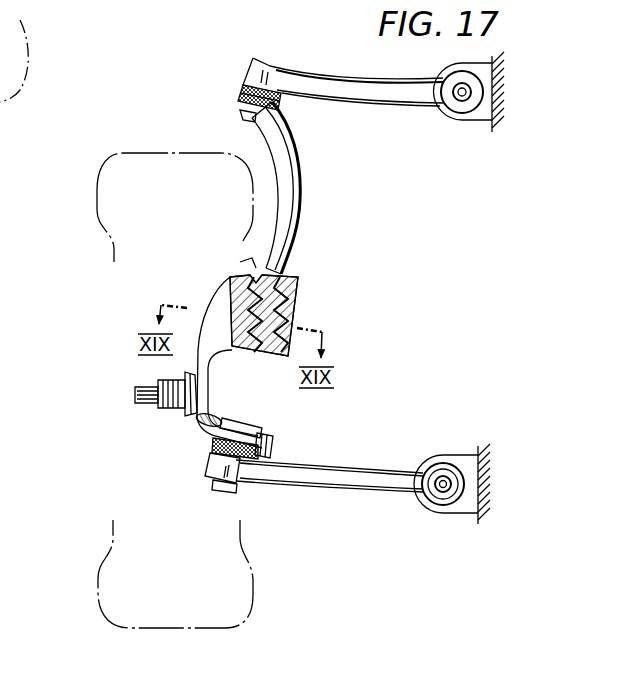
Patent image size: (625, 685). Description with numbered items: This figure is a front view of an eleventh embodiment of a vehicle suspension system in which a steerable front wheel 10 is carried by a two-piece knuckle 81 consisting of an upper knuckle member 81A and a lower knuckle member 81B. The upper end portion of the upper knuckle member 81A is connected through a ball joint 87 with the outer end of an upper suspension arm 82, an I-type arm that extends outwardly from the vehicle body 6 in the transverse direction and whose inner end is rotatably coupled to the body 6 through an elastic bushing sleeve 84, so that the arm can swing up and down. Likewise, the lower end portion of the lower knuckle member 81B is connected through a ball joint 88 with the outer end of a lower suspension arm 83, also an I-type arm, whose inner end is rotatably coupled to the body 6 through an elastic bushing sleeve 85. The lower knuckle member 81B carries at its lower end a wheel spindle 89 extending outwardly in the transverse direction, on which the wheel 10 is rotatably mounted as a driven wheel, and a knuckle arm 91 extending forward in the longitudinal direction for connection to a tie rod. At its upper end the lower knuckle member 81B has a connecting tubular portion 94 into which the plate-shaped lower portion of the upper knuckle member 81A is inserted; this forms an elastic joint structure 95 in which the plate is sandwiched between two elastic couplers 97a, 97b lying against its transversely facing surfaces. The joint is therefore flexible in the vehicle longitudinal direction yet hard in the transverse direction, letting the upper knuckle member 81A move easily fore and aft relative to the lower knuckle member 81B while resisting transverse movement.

The body 6 is at (497, 103).
The wheel 10 is at (97, 206).
The knuckle 81 is at (324, 289).
The upper knuckle member 81A is at (296, 202).
The lower knuckle member 81B is at (214, 368).
The upper suspension arm 82 is at (378, 96).
The lower suspension arm 83 is at (388, 492).
The elastic bushing sleeve 84 is at (457, 112).
The elastic bushing sleeve 85 is at (440, 496).
The ball joint 87 is at (281, 109).
The ball joint 88 is at (218, 442).
The wheel spindle 89 is at (137, 404).
The knuckle arm 91 is at (200, 423).
The connecting tubular portion 94 is at (298, 303).
The elastic joint structure 95 is at (246, 266).
The elastic coupler 97a is at (253, 276).
The elastic coupler 97b is at (290, 280).